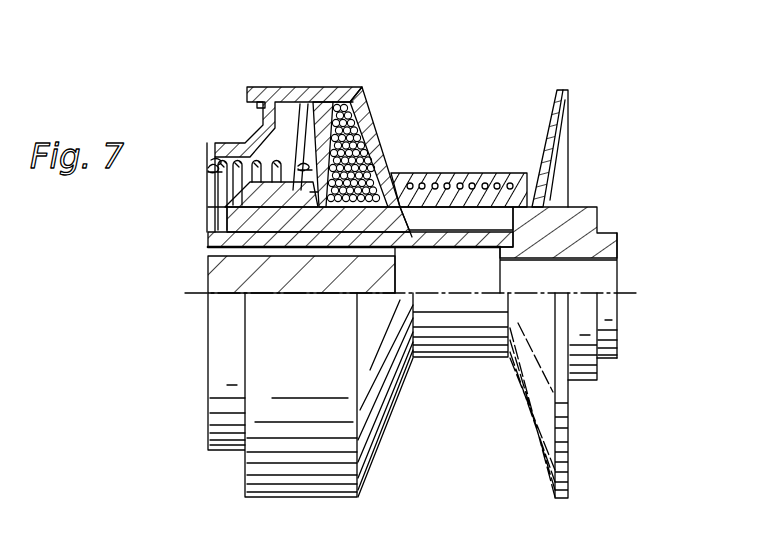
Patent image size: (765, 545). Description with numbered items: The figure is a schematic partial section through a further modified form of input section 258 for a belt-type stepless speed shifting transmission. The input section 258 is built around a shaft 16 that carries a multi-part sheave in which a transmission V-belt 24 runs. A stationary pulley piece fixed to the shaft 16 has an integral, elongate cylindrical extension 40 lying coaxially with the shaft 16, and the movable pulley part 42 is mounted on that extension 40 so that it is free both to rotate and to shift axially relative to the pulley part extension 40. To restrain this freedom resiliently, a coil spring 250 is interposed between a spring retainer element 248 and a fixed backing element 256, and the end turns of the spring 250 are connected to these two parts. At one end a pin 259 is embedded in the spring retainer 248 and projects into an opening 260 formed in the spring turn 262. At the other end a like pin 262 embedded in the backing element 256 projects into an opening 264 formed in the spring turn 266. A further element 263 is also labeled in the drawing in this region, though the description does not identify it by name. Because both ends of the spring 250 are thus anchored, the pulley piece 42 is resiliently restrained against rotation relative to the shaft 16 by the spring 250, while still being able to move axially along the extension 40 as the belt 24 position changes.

The shaft 16 is at (218, 266).
The transmission V-belt 24 is at (458, 172).
The cylindrical extension 40 is at (482, 238).
The movable pulley part 42 is at (366, 117).
The spring retainer element 248 is at (262, 138).
The coil spring 250 is at (282, 190).
The fixed backing element 256 is at (253, 190).
The input section 258 is at (636, 285).
The pin 259 is at (215, 163).
The opening 260 is at (207, 174).
The spring turn 262 is at (228, 178).
The gap 263 is at (313, 192).
The opening 264 is at (313, 205).
The spring turn 266 is at (306, 160).